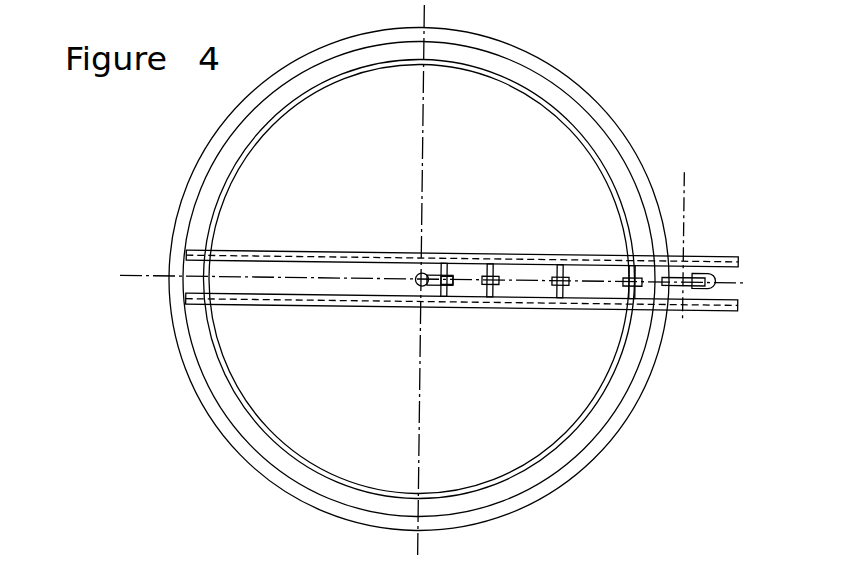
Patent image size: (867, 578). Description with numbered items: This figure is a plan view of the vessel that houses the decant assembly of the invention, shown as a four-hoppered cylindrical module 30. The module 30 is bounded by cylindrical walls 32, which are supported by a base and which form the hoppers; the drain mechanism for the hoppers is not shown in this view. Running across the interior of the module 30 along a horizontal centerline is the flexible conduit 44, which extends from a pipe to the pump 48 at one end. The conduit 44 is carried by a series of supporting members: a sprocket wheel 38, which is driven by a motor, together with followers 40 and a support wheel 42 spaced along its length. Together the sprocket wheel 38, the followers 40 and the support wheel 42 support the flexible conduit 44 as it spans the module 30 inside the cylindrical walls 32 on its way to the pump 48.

The cylindrical module 30 is at (150, 378).
The cylindrical walls 32 is at (633, 378).
The sprocket wheel 38 is at (687, 274).
The followers 40 is at (627, 266).
The support wheel 42 is at (455, 279).
The flexible conduit 44 is at (716, 281).
The pump 48 is at (435, 267).